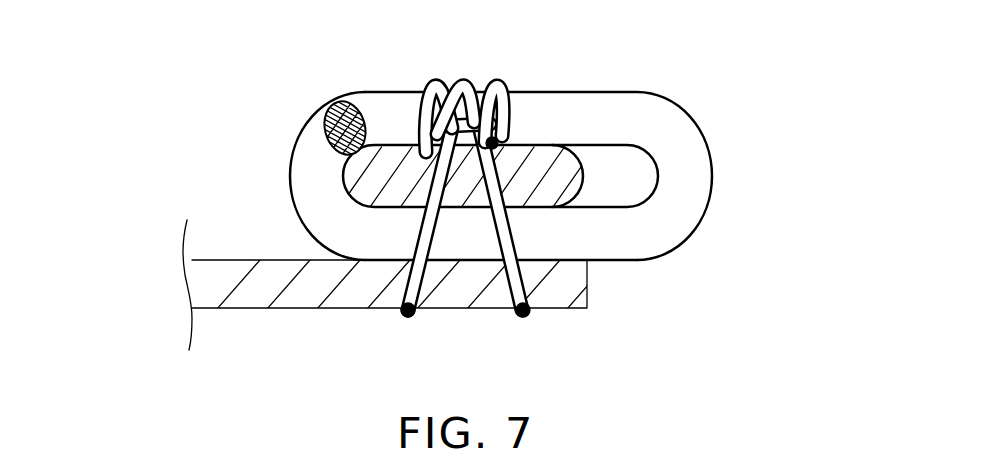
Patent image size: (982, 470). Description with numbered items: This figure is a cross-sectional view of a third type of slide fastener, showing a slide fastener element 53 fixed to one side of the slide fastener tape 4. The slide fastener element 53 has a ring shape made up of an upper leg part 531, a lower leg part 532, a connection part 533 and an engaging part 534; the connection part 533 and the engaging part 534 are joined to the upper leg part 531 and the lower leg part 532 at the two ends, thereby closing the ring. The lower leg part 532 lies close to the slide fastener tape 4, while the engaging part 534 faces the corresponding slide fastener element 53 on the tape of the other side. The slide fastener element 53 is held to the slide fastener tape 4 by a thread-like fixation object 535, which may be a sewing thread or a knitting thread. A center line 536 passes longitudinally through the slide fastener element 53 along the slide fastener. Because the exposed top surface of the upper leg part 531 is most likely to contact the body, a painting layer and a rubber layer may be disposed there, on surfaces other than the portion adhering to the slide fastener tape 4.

The slide fastener tape 4 is at (225, 285).
The slide fastener element 53 is at (524, 185).
The upper leg part 531 is at (455, 201).
The lower leg part 532 is at (560, 233).
The connection part 533 is at (310, 170).
The engaging part 534 is at (678, 173).
The thread-like fixation object 535 is at (442, 100).
The center line 536 is at (397, 170).